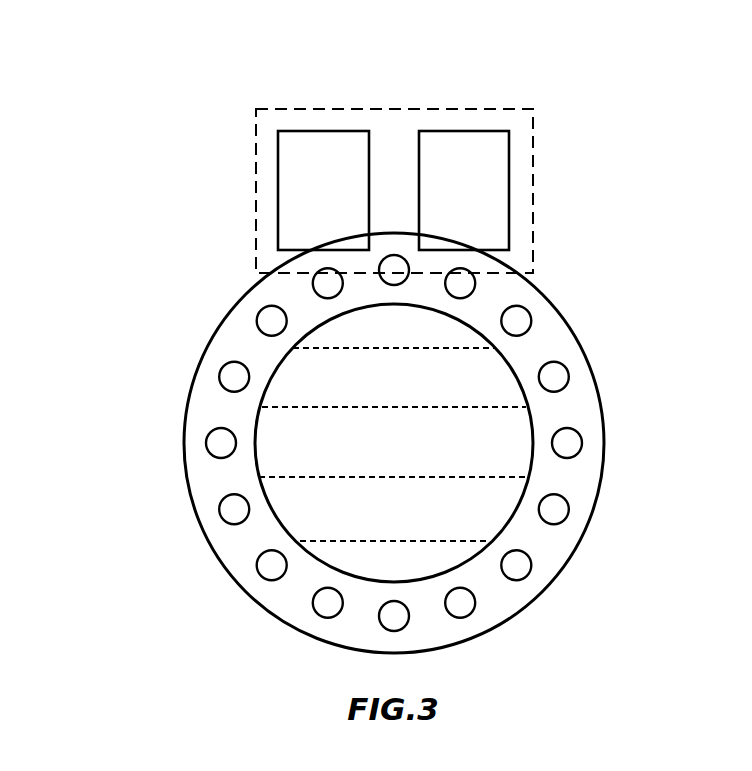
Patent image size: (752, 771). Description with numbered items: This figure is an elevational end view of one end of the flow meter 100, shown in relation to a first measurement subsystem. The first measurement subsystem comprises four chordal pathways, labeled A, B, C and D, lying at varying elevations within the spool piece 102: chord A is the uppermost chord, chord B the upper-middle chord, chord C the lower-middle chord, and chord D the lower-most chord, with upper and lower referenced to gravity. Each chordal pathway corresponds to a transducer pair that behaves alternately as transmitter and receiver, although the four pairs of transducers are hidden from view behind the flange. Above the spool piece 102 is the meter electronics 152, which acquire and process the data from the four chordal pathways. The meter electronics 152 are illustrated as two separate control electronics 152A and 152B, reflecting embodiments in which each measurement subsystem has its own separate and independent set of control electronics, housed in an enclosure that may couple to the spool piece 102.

The flow meter 100 is at (150, 272).
The spool piece 102 is at (550, 302).
The meter electronics 152 is at (468, 108).
The control electronics 152A is at (300, 178).
The control electronics 152B is at (490, 175).